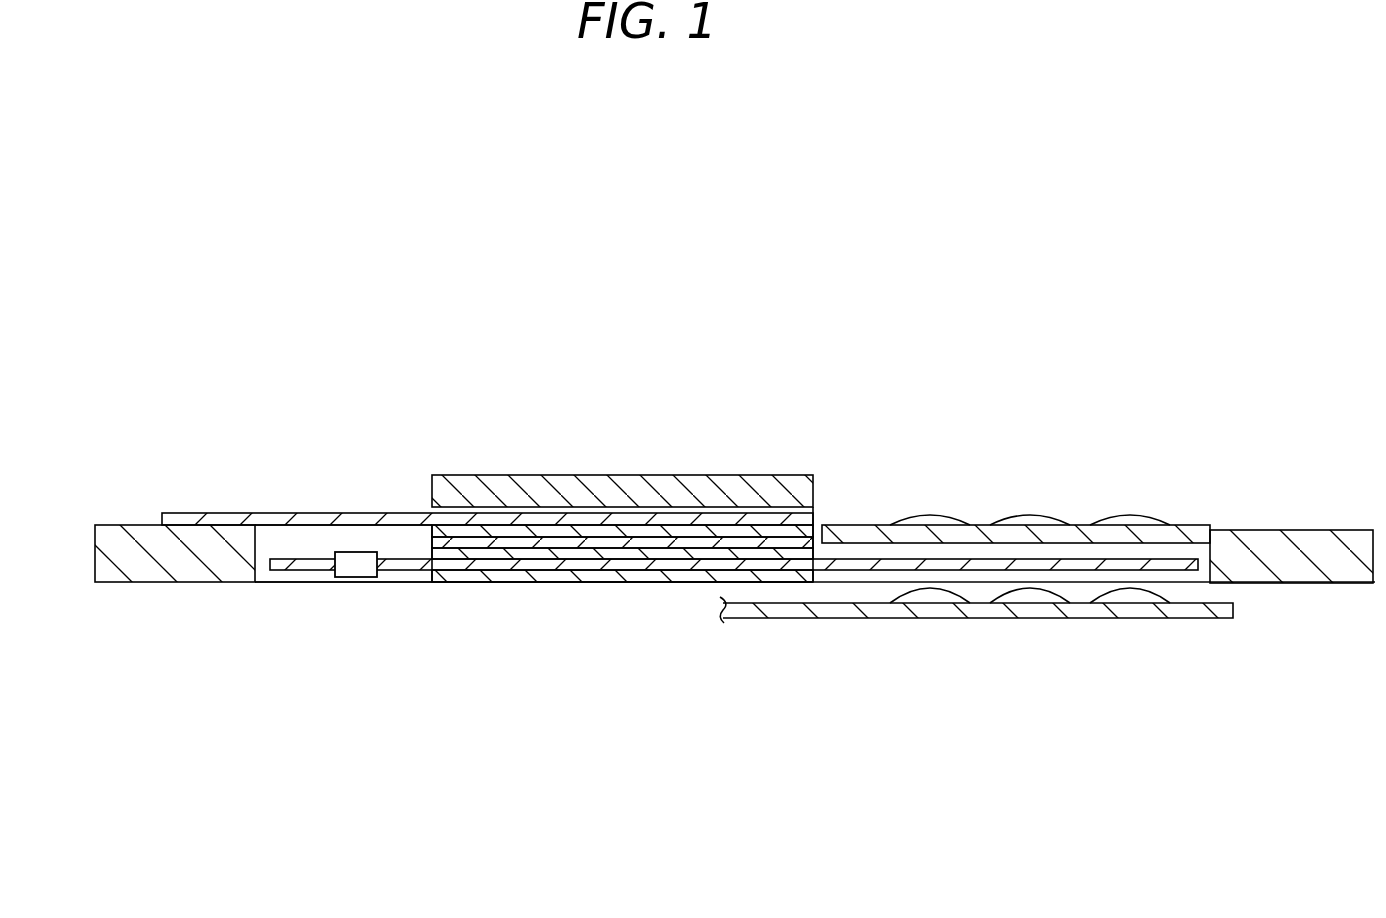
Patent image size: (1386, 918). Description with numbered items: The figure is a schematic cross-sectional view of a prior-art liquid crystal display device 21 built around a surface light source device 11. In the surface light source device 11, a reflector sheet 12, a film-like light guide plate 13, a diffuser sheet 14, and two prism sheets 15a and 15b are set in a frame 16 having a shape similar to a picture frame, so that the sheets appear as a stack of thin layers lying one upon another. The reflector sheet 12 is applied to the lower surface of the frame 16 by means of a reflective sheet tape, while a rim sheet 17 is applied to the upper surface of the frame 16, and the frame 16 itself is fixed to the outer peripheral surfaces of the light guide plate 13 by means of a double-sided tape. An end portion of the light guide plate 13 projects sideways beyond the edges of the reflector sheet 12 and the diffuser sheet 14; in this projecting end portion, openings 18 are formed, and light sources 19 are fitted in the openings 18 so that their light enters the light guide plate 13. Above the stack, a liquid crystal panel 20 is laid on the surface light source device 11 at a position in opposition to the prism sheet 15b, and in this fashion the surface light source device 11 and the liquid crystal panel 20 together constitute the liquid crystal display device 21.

The surface light source device 11 is at (220, 500).
The reflector sheet 12 is at (652, 576).
The film-like light guide plate 13 is at (578, 566).
The diffuser sheet 14 is at (640, 553).
The prism sheet 15a is at (683, 542).
The prism sheet 15b is at (722, 532).
The frame 16 is at (191, 565).
The rim sheet 17 is at (299, 519).
The openings 18 is at (734, 619).
The light sources 19 is at (352, 572).
The liquid crystal panel 20 is at (502, 490).
The liquid crystal display device 21 is at (1110, 373).